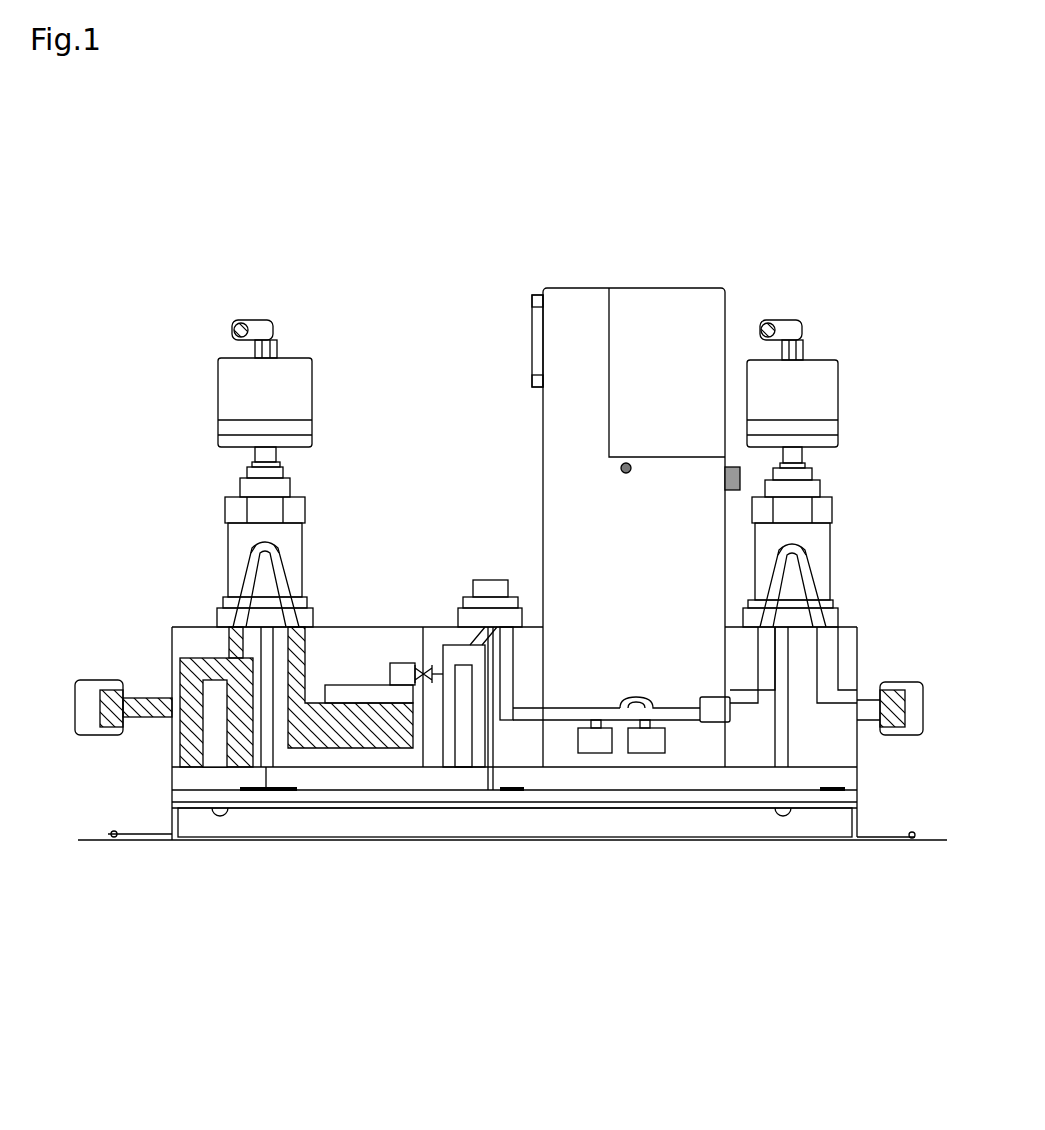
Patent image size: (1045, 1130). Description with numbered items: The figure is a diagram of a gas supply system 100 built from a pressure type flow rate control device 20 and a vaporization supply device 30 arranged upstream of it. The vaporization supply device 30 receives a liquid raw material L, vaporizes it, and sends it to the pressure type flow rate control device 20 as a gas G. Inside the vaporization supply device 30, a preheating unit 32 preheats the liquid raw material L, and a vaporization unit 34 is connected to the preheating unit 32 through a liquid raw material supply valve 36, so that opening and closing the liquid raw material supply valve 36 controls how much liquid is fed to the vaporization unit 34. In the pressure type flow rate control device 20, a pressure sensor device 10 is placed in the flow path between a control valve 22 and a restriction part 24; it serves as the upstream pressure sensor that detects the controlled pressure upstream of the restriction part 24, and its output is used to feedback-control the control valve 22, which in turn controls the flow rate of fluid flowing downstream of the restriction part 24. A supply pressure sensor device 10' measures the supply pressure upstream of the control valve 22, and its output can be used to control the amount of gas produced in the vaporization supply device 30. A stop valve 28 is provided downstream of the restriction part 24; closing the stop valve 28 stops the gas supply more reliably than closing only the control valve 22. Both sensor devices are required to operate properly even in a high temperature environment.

The gas supply system 100 is at (824, 222).
The pressure type flow rate control device 20 is at (528, 547).
The vaporization supply device 30 is at (366, 485).
The liquid raw material supply valve 36 is at (222, 525).
The preheating unit 32 is at (212, 778).
The vaporization unit 34 is at (353, 758).
The gas G is at (505, 655).
The control valve 22 is at (641, 686).
The restriction part 24 is at (727, 723).
The supply pressure sensor device 10' is at (590, 818).
The pressure sensor device 10 is at (656, 812).
The stop valve 28 is at (829, 560).
The liquid raw material L is at (143, 717).